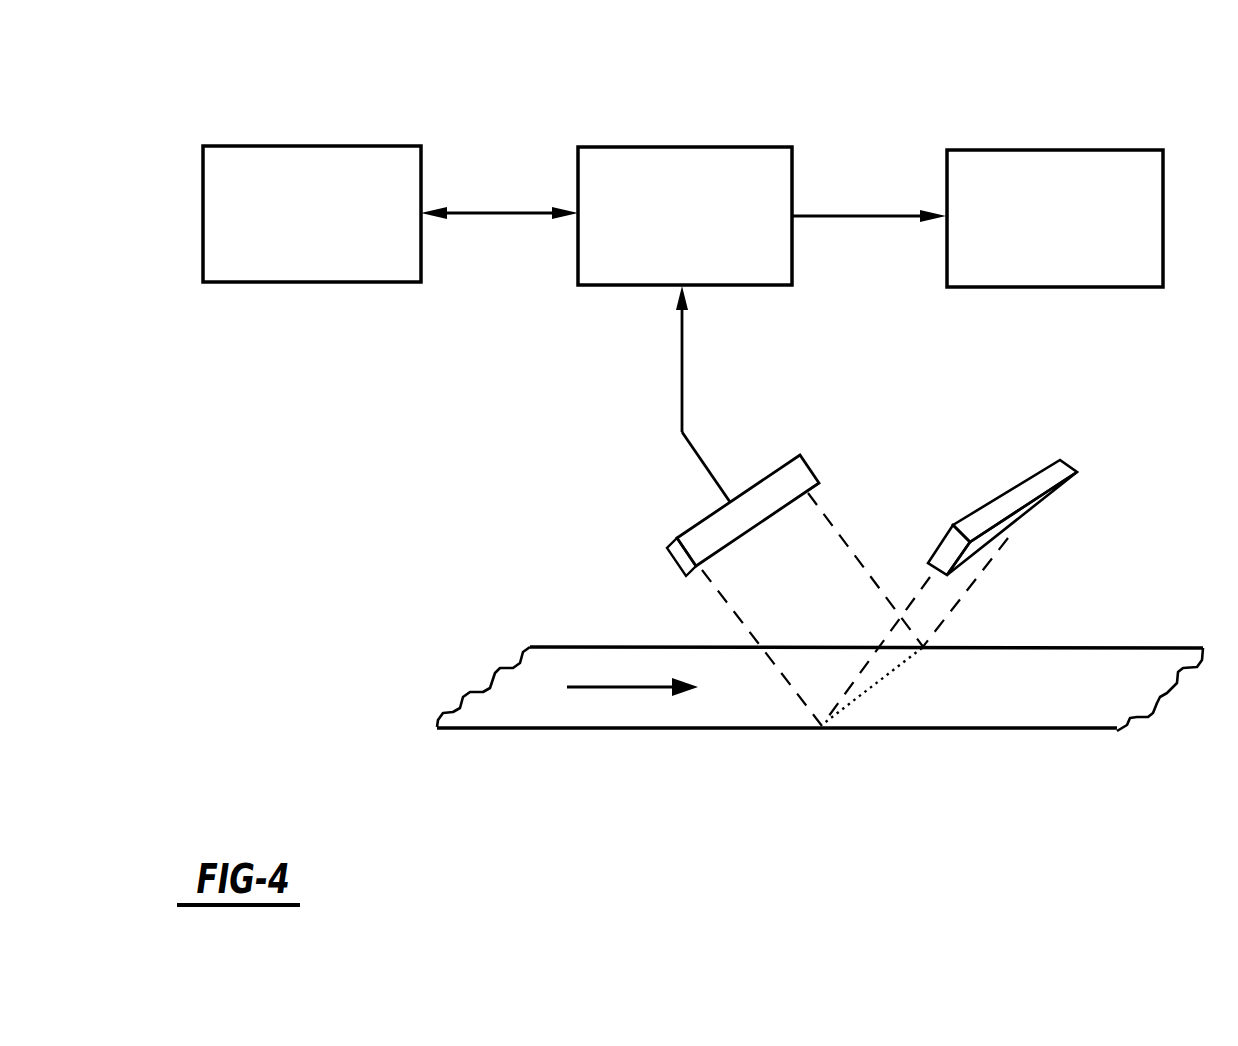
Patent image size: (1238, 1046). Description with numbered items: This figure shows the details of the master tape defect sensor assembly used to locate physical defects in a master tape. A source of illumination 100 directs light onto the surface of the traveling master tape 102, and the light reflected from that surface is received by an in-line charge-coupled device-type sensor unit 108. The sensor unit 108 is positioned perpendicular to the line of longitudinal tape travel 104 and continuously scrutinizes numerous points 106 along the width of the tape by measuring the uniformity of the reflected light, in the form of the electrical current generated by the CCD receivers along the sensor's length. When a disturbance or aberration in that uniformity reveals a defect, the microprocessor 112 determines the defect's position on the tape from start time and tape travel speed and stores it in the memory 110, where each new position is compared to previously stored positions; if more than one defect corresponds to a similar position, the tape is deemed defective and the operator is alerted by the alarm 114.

The source of illumination 100 is at (1063, 492).
The master tape 102 is at (500, 668).
The line of longitudinal tape travel 104 is at (635, 688).
The points along the width of the traveling tape 106 is at (868, 686).
The in-line charge-coupled device-type sensor unit 108 is at (686, 538).
The memory 110 is at (313, 145).
The microprocessor 112 is at (693, 147).
The alarm 114 is at (1065, 150).